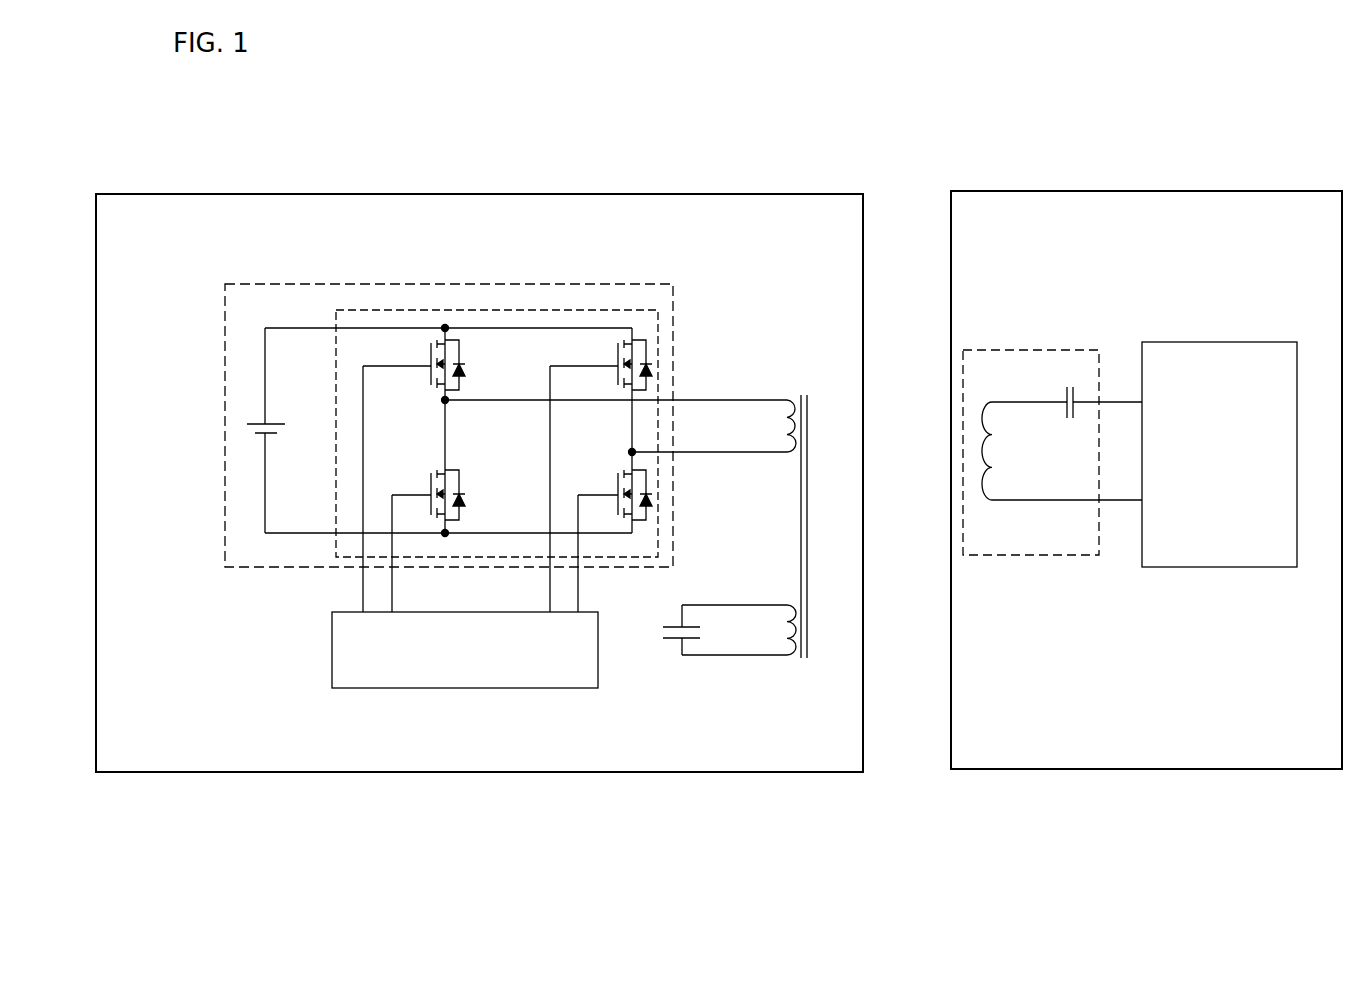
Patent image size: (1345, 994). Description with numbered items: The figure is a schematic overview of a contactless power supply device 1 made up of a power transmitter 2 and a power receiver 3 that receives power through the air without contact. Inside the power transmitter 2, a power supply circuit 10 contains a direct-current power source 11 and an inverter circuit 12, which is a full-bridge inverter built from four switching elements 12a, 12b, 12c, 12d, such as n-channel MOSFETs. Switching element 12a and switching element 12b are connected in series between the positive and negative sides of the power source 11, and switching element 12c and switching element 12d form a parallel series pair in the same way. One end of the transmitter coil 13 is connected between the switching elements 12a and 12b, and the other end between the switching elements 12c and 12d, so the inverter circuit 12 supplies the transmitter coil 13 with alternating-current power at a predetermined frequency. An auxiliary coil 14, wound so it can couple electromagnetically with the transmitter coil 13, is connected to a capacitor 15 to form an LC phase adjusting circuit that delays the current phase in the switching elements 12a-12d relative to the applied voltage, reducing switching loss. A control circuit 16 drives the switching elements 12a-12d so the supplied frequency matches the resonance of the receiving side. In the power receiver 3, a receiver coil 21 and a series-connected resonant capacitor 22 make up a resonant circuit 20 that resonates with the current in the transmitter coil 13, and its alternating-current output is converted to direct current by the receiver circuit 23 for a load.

The contactless power supply device 1 is at (1262, 838).
The power transmitter 2 is at (722, 773).
The power receiver 3 is at (1066, 768).
The power supply circuit 10 is at (293, 567).
The power source 11 is at (257, 418).
The inverter circuit 12 is at (493, 310).
The switching element 12a is at (427, 340).
The switching element 12b is at (433, 477).
The switching element 12c is at (617, 340).
The switching element 12d is at (618, 477).
The transmitter coil 13 is at (790, 393).
The auxiliary coil 14 is at (790, 660).
The capacitor 15 is at (675, 642).
The control circuit 16 is at (470, 690).
The resonant circuit 20 is at (1027, 557).
The receiver coil 21 is at (978, 398).
The resonant capacitor 22 is at (1068, 382).
The receiver circuit 23 is at (1222, 567).